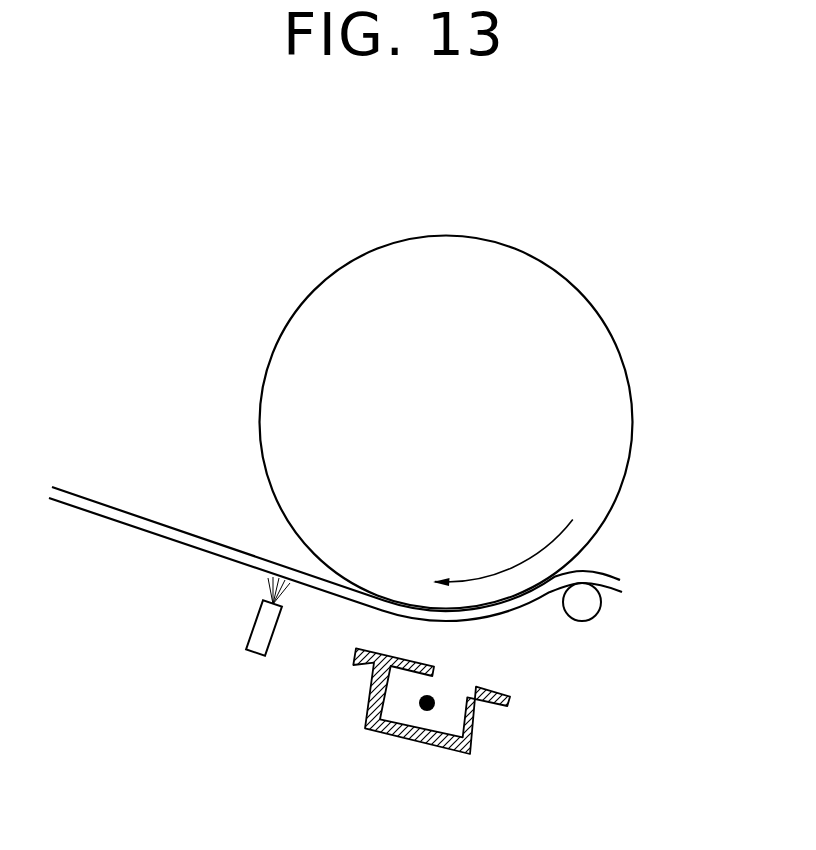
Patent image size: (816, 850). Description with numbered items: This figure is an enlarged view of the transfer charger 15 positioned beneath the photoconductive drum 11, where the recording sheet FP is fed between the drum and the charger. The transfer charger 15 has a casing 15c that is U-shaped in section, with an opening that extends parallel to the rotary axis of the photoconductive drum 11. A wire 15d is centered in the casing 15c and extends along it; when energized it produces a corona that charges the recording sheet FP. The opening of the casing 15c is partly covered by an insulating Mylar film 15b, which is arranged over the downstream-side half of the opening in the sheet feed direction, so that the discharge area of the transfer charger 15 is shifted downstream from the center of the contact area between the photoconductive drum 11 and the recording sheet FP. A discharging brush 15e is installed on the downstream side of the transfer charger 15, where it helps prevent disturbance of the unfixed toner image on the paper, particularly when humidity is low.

The photoconductive drum 11 is at (620, 382).
The recording sheet FP is at (602, 585).
The transfer charger 15 is at (412, 719).
The Mylar film 15b is at (371, 649).
The casing 15c is at (365, 729).
The wire 15d is at (429, 712).
The discharging brush 15e is at (252, 631).